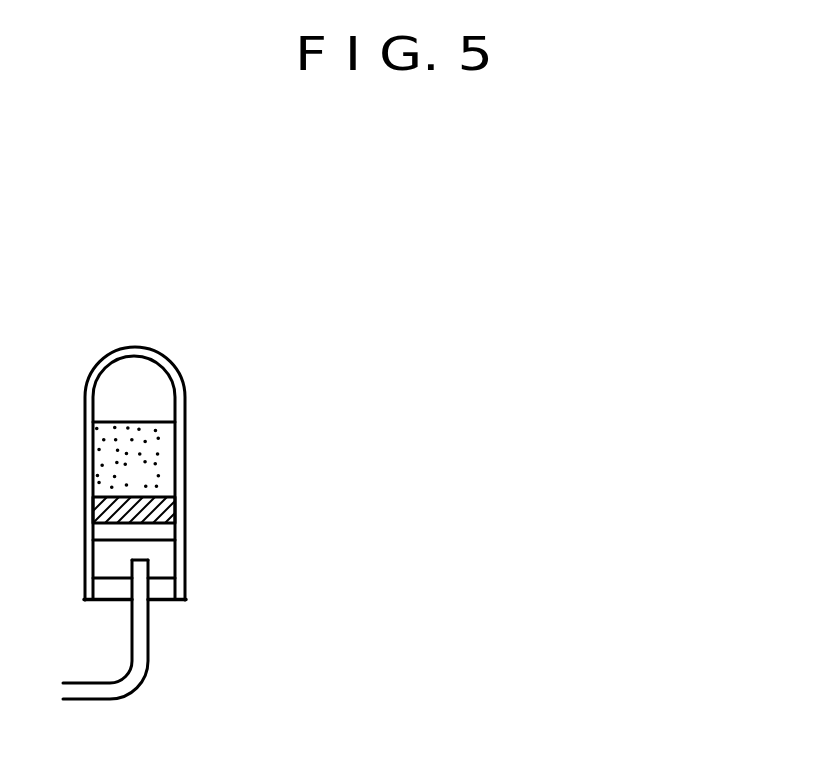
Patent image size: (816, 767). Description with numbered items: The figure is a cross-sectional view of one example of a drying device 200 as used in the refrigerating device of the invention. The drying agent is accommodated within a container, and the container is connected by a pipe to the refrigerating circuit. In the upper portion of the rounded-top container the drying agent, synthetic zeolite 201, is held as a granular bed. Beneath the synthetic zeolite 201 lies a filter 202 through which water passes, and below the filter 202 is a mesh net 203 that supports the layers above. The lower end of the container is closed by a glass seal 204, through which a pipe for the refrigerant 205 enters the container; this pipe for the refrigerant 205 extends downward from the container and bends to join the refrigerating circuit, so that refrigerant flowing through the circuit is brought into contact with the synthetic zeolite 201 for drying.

The drying device 200 is at (155, 351).
The synthetic zeolite 201 is at (155, 443).
The filter 202 is at (157, 513).
The mesh net 203 is at (153, 540).
The glass seal 204 is at (160, 603).
The pipe for the refrigerant 205 is at (148, 667).